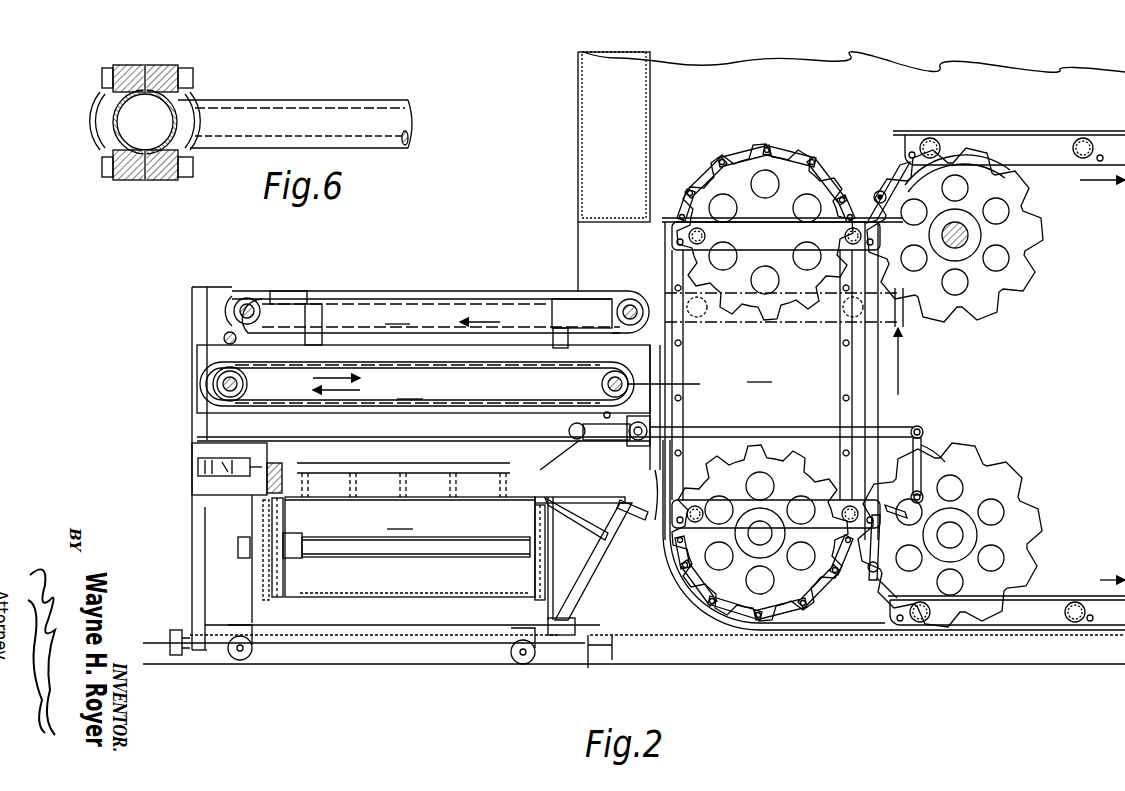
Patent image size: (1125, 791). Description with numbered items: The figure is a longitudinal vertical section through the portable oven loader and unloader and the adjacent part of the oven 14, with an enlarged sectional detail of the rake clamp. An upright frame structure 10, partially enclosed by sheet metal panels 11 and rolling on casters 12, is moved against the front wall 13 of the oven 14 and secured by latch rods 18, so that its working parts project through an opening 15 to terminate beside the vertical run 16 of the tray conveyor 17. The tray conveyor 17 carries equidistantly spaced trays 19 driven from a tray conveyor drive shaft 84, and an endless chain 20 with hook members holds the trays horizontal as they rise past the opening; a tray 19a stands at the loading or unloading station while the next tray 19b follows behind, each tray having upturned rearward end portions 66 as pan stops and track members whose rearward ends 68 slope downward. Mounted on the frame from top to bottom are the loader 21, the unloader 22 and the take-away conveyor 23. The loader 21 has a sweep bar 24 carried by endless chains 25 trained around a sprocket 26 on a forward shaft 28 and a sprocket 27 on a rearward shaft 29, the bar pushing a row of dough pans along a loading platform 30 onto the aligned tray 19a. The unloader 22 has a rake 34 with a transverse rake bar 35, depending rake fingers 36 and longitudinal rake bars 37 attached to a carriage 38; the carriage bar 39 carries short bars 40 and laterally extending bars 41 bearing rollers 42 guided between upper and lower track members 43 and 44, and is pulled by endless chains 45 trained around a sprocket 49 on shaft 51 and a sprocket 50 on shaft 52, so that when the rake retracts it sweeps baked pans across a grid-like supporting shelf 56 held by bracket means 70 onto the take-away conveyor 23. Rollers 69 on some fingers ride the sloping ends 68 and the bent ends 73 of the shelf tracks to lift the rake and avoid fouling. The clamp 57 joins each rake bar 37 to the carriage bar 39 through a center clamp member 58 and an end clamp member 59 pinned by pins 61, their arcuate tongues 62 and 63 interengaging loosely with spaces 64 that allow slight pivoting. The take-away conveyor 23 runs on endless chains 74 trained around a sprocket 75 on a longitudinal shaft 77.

In FIG. 2, the frame structure 10 is at (190, 540).
In FIG. 2, the sheet metal panels 11 is at (192, 400).
In FIG. 2, the casters 12 is at (240, 662).
In FIG. 2, the front wall 13 is at (578, 178).
In FIG. 2, the oven 14 is at (878, 58).
In FIG. 2, the opening 15 is at (592, 262).
In FIG. 2, the vertical run 16 is at (782, 379).
In FIG. 2, the tray conveyor 17 is at (1022, 130).
In FIG. 2, the latch rods 18 is at (398, 645).
In FIG. 2, the trays 19 is at (1058, 131).
In FIG. 2, the tray 19a is at (788, 325).
In FIG. 2, the next tray 19b is at (1050, 596).
In FIG. 2, the endless chain 20 is at (718, 160).
In FIG. 2, the loader 21 is at (418, 298).
In FIG. 2, the unloader 22 is at (431, 379).
In FIG. 2, the take-away conveyor 23 is at (391, 548).
In FIG. 2, the sweep bar 24 is at (222, 338).
In FIG. 2, the endless chains 25 is at (432, 327).
In FIG. 2, the sprocket 26 is at (230, 300).
In FIG. 2, the sprocket 27 is at (640, 334).
In FIG. 2, the shaft 28 is at (247, 300).
In FIG. 2, the shaft 29 is at (640, 298).
In FIG. 2, the loading platform 30 is at (345, 291).
In FIG. 2, the rake 34 is at (920, 430).
In FIG. 2, the rake bar 35 is at (915, 425).
In FIG. 2, the rake fingers 36 is at (922, 460).
In FIG. 6, the rake bar 37 is at (273, 110).
In FIG. 2, the rake bar 37 is at (760, 427).
In FIG. 2, the carriage 38 is at (635, 446).
In FIG. 6, the carriage bar 39 is at (147, 182).
In FIG. 2, the carriage bar 39 is at (649, 495).
In FIG. 2, the short bar 40 is at (596, 441).
In FIG. 2, the short bar 41 is at (546, 459).
In FIG. 2, the roller 42 is at (569, 431).
In FIG. 2, the upper track member 43 is at (455, 441).
In FIG. 2, the lower track member 44 is at (385, 441).
In FIG. 2, the endless chains 45 is at (432, 366).
In FIG. 2, the sprocket 49 is at (245, 387).
In FIG. 2, the sprocket 50 is at (600, 385).
In FIG. 2, the shaft 51 is at (225, 380).
In FIG. 2, the shaft 52 is at (676, 390).
In FIG. 2, the grid-like supporting shelf 56 is at (580, 497).
In FIG. 2, the clamp 57 is at (615, 418).
In FIG. 6, the center clamp member 58 is at (108, 130).
In FIG. 6, the end clamp member 59 is at (185, 45).
In FIG. 6, the pins 61 is at (118, 122).
In FIG. 6, the arcuate tongues 62 is at (103, 108).
In FIG. 6, the arcuate tongues 63 is at (125, 66).
In FIG. 6, the spaces 64 is at (182, 92).
In FIG. 2, the upturned rearward end portions 66 is at (905, 503).
In FIG. 2, the rearward ends 68 is at (925, 503).
In FIG. 2, the rollers 69 is at (950, 526).
In FIG. 2, the bracket means 70 is at (595, 565).
In FIG. 2, the downwardly bent rearward ends 73 is at (640, 515).
In FIG. 2, the endless chains 74 is at (282, 600).
In FIG. 2, the sprocket 75 is at (288, 565).
In FIG. 2, the shaft 77 is at (385, 557).
In FIG. 2, the tray conveyor drive shaft 84 is at (968, 235).